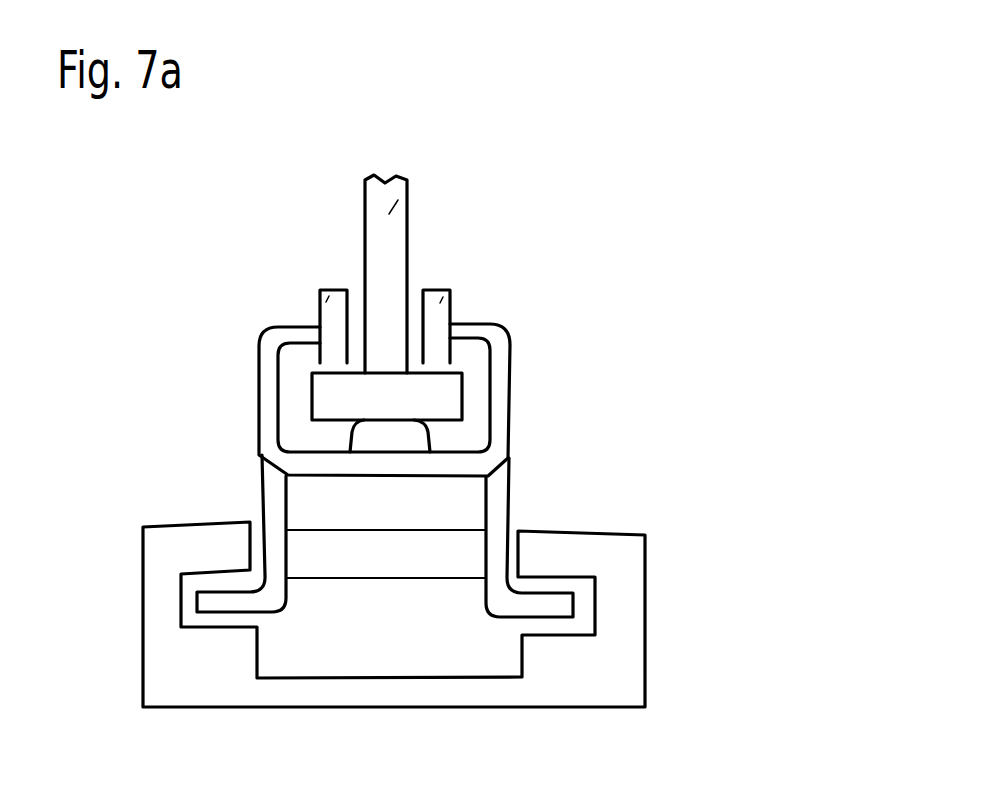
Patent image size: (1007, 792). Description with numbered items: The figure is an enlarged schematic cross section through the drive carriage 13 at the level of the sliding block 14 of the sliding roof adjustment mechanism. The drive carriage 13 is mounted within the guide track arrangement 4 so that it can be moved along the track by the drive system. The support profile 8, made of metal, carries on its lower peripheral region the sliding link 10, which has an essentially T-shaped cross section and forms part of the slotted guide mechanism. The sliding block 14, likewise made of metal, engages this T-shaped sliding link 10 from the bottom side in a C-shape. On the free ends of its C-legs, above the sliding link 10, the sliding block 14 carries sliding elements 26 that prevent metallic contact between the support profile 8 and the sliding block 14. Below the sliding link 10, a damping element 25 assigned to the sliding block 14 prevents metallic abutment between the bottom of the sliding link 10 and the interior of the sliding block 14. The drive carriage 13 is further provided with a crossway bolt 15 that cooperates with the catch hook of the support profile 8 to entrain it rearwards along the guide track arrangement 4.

The guide track arrangement 4 is at (625, 562).
The support profile 8 is at (408, 193).
The sliding link 10 is at (443, 397).
The drive carriage 13 is at (583, 293).
The sliding block 14 is at (493, 322).
The crossway bolt 15 is at (457, 552).
The damping element 25 is at (413, 443).
The sliding elements 26 is at (320, 290).